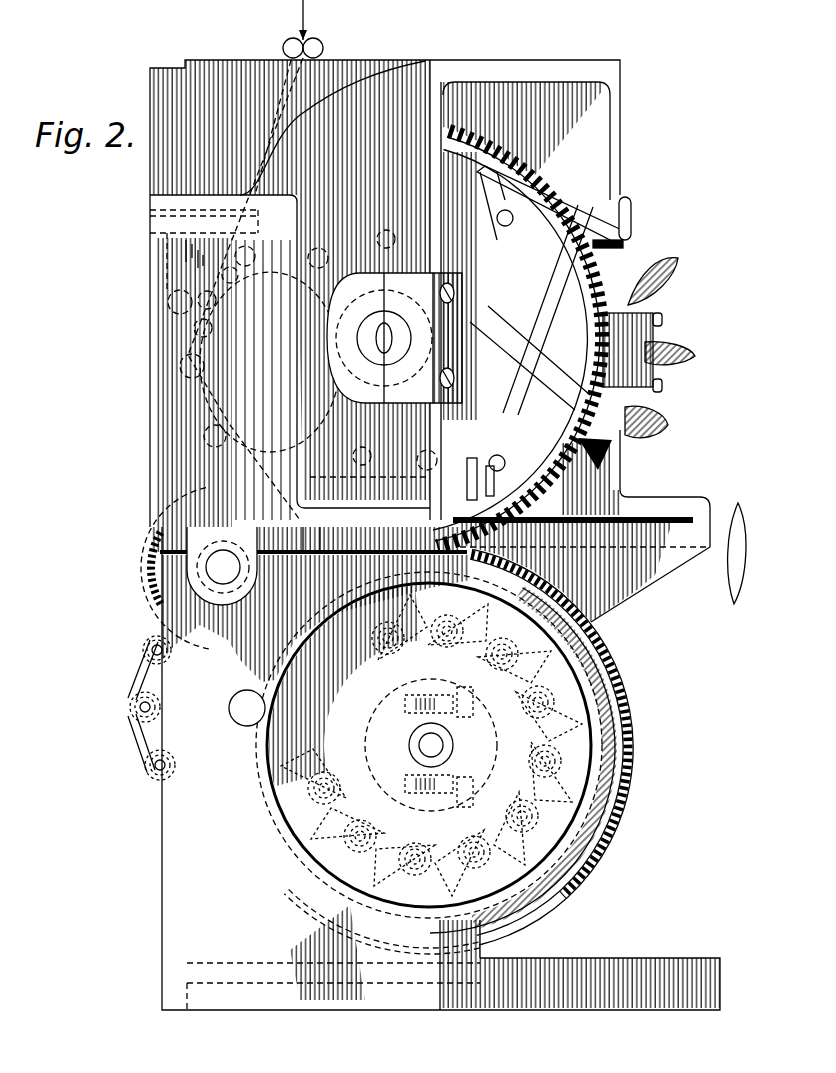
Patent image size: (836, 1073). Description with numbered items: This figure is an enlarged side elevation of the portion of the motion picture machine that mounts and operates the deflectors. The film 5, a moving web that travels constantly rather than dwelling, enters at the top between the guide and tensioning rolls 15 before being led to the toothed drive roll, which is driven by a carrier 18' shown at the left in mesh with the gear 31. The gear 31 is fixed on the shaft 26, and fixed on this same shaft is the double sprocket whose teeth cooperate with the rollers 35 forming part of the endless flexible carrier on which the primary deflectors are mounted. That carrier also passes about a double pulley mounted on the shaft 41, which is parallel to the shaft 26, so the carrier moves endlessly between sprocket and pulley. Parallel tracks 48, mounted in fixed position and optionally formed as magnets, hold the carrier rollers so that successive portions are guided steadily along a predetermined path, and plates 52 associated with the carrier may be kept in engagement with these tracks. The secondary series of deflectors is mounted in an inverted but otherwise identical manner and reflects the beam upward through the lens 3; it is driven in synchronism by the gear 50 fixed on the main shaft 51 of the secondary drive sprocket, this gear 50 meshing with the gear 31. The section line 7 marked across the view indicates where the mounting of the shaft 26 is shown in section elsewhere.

The lens 3 is at (746, 530).
The film 5 is at (306, 22).
The section line 7 is at (420, 1047).
The guide and tensioning rolls 15 is at (293, 38).
The carrier 18' is at (179, 568).
The shaft 26 is at (453, 745).
The gear 31 is at (633, 733).
The rollers 35 is at (497, 456).
The shaft 41 is at (232, 702).
The tracks 48 is at (680, 350).
The gear 50 is at (534, 166).
The main shaft 51 is at (385, 324).
The plates 52 is at (630, 272).